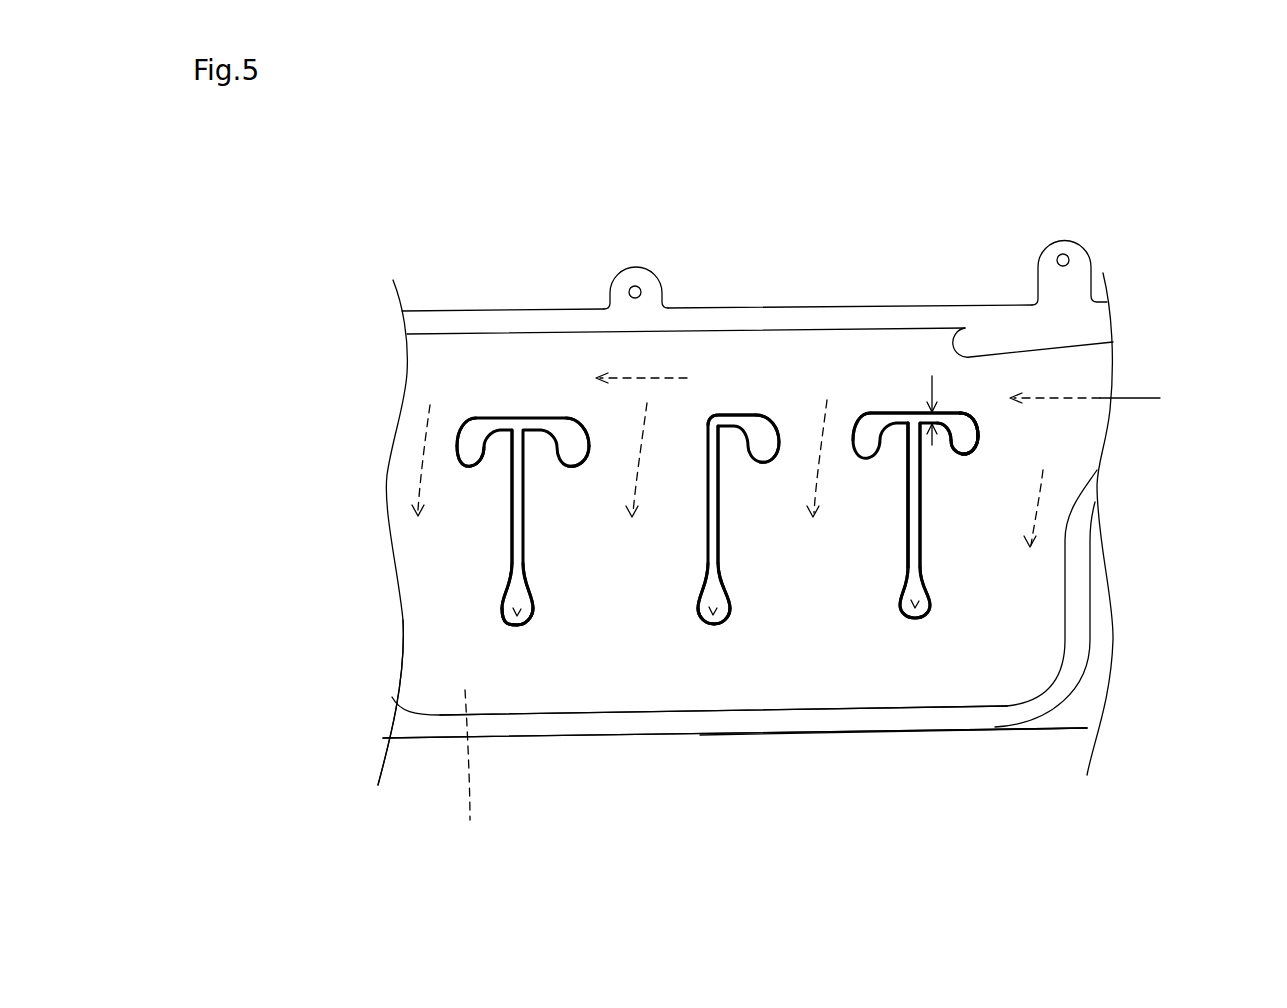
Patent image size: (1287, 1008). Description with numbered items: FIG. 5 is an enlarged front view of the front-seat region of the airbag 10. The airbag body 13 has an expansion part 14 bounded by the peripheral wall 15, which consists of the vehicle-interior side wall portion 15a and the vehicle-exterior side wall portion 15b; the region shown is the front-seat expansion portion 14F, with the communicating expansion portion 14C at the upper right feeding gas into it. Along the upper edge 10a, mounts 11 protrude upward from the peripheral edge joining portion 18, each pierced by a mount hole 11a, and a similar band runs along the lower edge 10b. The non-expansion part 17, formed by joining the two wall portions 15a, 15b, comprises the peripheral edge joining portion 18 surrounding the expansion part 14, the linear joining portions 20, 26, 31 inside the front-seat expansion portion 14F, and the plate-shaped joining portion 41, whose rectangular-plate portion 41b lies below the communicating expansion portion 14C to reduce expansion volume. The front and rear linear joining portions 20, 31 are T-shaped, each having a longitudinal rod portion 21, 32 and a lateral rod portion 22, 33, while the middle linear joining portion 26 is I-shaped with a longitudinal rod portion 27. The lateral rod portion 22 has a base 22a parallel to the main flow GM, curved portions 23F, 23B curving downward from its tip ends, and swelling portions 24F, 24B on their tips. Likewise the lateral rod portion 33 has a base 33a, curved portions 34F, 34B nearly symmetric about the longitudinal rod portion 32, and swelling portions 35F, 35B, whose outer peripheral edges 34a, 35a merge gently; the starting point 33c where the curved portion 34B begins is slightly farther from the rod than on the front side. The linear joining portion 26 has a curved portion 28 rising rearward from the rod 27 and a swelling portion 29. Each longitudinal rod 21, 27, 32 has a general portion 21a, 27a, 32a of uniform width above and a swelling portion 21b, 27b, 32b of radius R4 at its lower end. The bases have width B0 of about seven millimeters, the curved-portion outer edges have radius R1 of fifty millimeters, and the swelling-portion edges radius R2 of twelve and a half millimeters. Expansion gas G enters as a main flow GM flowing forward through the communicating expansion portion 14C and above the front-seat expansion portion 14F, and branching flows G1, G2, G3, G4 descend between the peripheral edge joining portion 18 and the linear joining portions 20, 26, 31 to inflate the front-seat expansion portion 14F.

The airbag 10 is at (421, 247).
The upper edge 10a is at (463, 320).
The lower edge portion of plate 10b is at (557, 725).
The mount 11 is at (655, 287).
The mount hole 11a is at (630, 286).
The airbag body 13 is at (840, 752).
The expansion part 14 is at (757, 687).
The front-seat expansion portion 14F is at (723, 710).
The communicating expansion portion 14C is at (1097, 375).
The peripheral wall 15 is at (505, 855).
The vehicle-interior side wall portion 15a is at (440, 690).
The vehicle-exterior side wall portion 15b is at (472, 773).
The non-expansion part 17 is at (735, 733).
The peripheral edge joining portion 18 is at (690, 727).
The linear joining portion 20 is at (545, 622).
The longitudinal rod portion 21 is at (305, 540).
The general portion 21a is at (510, 530).
The swelling portion 21b is at (505, 607).
The lateral rod portion 22 is at (523, 417).
The base 22a is at (523, 521).
The curved portion 23B is at (557, 417).
The curved portion 23F is at (470, 424).
The swelling portion 24F is at (470, 450).
The swelling portion 24B is at (573, 447).
The linear joining portion 26 is at (688, 622).
The longitudinal rod portion 27 is at (862, 660).
The general portion 27a is at (717, 513).
The swelling portion 27b is at (728, 603).
The curved portion 28 is at (733, 412).
The swelling portion 29 is at (768, 440).
The linear joining portion 31 is at (902, 545).
The longitudinal rod portion 32 is at (1087, 825).
The general portion 32a is at (920, 513).
The swelling portion 32b is at (930, 607).
The lateral rod portion 33 is at (910, 417).
The base 33a is at (915, 515).
The starting point 33c is at (908, 412).
The curved portion 34F is at (866, 418).
The curved portion 34B is at (950, 412).
The outer peripheral edge 34a is at (978, 418).
The swelling portion 35F is at (874, 495).
The swelling portion 35B is at (964, 458).
The outer peripheral edge 35a is at (978, 448).
The plate-shaped joining portion 41 is at (1088, 680).
The rectangular-plate portion 41b is at (1045, 614).
The radius of curvature R1 is at (972, 427).
The radius of curvature R2 is at (972, 452).
The radius of curvature R4 is at (517, 627).
The width dimension B0 is at (934, 396).
The branching flow G1 is at (416, 481).
The branching flow G2 is at (635, 477).
The branching flow G3 is at (807, 475).
The branching flow G4 is at (1030, 525).
The main flow GM is at (649, 365).
The expansion gas G is at (1124, 399).